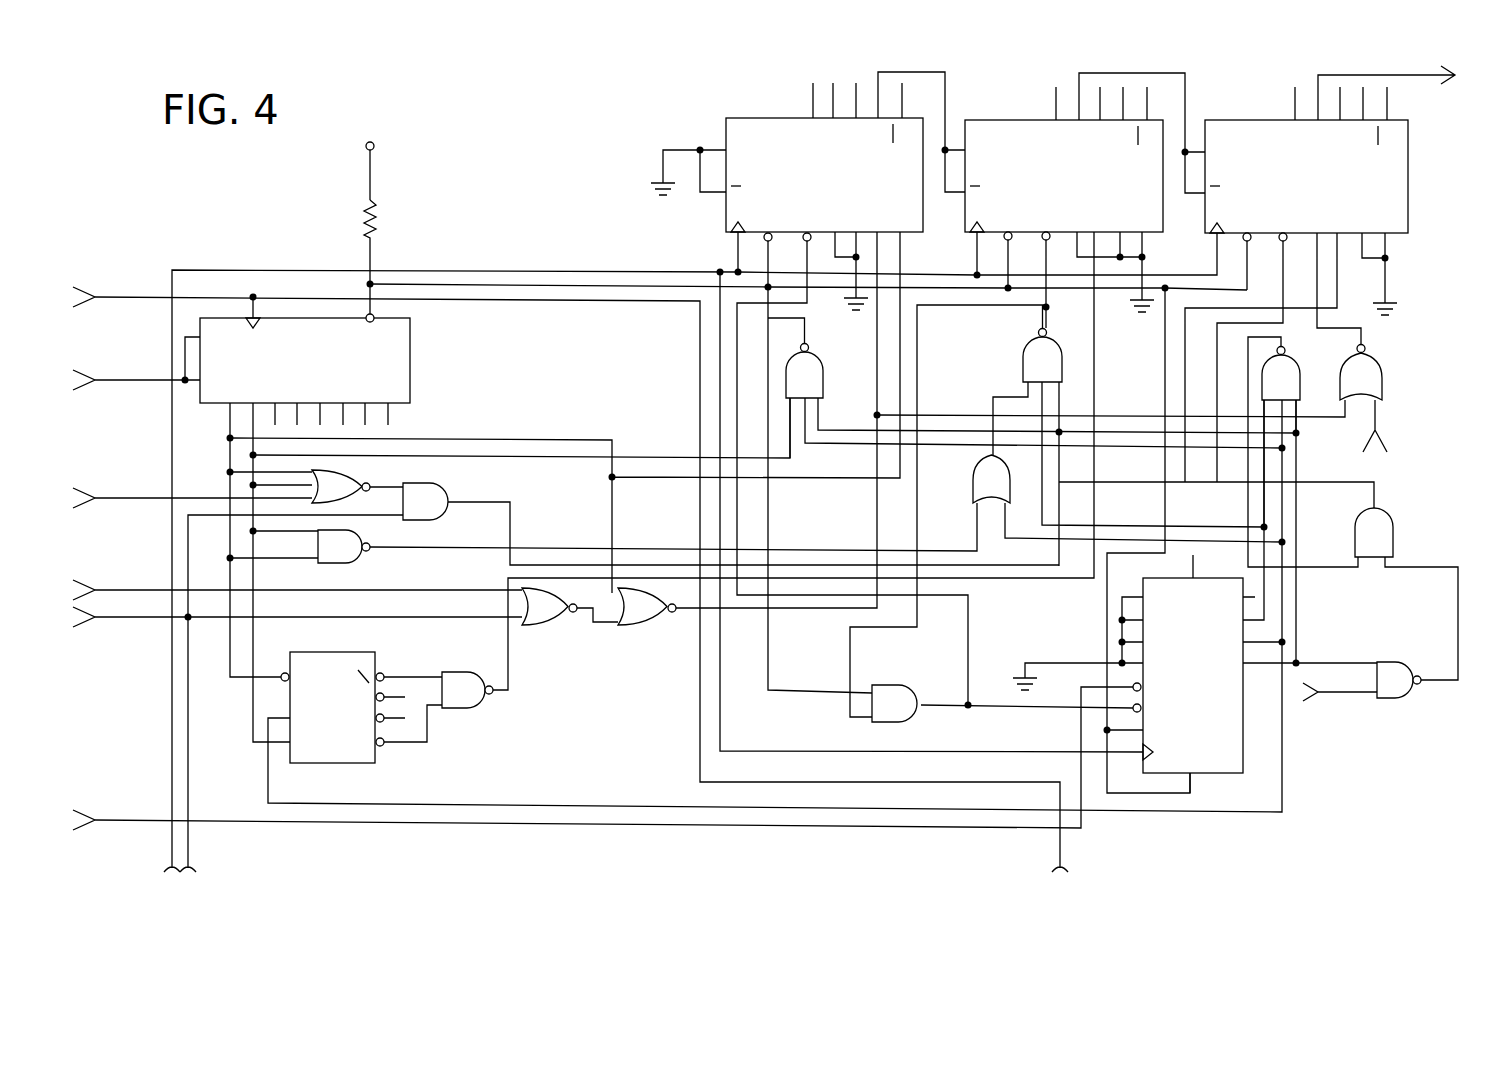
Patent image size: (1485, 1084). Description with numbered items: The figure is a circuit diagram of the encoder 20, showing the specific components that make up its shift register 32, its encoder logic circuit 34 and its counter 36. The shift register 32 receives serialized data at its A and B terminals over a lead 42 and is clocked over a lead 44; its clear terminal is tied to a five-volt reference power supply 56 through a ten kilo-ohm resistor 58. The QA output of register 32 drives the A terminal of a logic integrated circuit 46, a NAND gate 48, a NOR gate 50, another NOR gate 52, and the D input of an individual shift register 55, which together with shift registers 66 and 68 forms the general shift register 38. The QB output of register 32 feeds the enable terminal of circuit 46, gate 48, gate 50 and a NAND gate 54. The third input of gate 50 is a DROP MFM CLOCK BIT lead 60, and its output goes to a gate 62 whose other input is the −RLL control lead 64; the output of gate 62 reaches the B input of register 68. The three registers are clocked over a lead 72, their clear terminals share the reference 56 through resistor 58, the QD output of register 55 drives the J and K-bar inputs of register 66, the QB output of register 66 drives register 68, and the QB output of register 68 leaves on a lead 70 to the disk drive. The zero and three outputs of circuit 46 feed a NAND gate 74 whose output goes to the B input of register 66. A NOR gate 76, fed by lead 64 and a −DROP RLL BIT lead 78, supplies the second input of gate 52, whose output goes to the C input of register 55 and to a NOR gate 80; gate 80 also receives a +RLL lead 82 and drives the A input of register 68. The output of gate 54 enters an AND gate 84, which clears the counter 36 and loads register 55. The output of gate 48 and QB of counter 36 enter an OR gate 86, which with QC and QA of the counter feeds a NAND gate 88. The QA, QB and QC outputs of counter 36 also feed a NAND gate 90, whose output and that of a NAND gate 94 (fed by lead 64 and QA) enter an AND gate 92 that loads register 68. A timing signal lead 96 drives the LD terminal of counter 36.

The encoder 20 is at (430, 125).
The shift register 32 is at (280, 353).
The encoder logic circuit 34 is at (582, 251).
The counter 36 is at (1196, 723).
The shift register 38 is at (698, 86).
The lead 42 is at (130, 380).
The lead 44 is at (130, 297).
The logic integrated circuit 46 is at (316, 713).
The NAND gate 48 is at (328, 556).
The NOR gate 50 is at (323, 496).
The NOR gate 52 is at (632, 617).
The NAND gate 54 is at (794, 385).
The shift register 55 is at (817, 191).
The five-volt reference power supply 56 is at (366, 146).
The resistor 58 is at (363, 207).
The lead 60 is at (130, 498).
The NAND gate 62 is at (413, 511).
The −RLL control lead 64 is at (130, 617).
The shift register 66 is at (1052, 193).
The shift register 68 is at (1299, 194).
The lead 70 is at (1370, 75).
The lead 72 is at (437, 270).
The NAND gate 74 is at (452, 699).
The NOR gate 76 is at (535, 617).
The −DROP RLL BIT lead 78 is at (130, 590).
The NOR gate 80 is at (1351, 388).
The +RLL lead 82 is at (1385, 428).
The AND gate 84 is at (881, 713).
The OR gate 86 is at (981, 493).
The NAND gate 88 is at (1032, 370).
The NAND gate 90 is at (1271, 388).
The AND gate 92 is at (1364, 541).
The NAND gate 94 is at (1383, 689).
The timing signal lead 96 is at (118, 820).